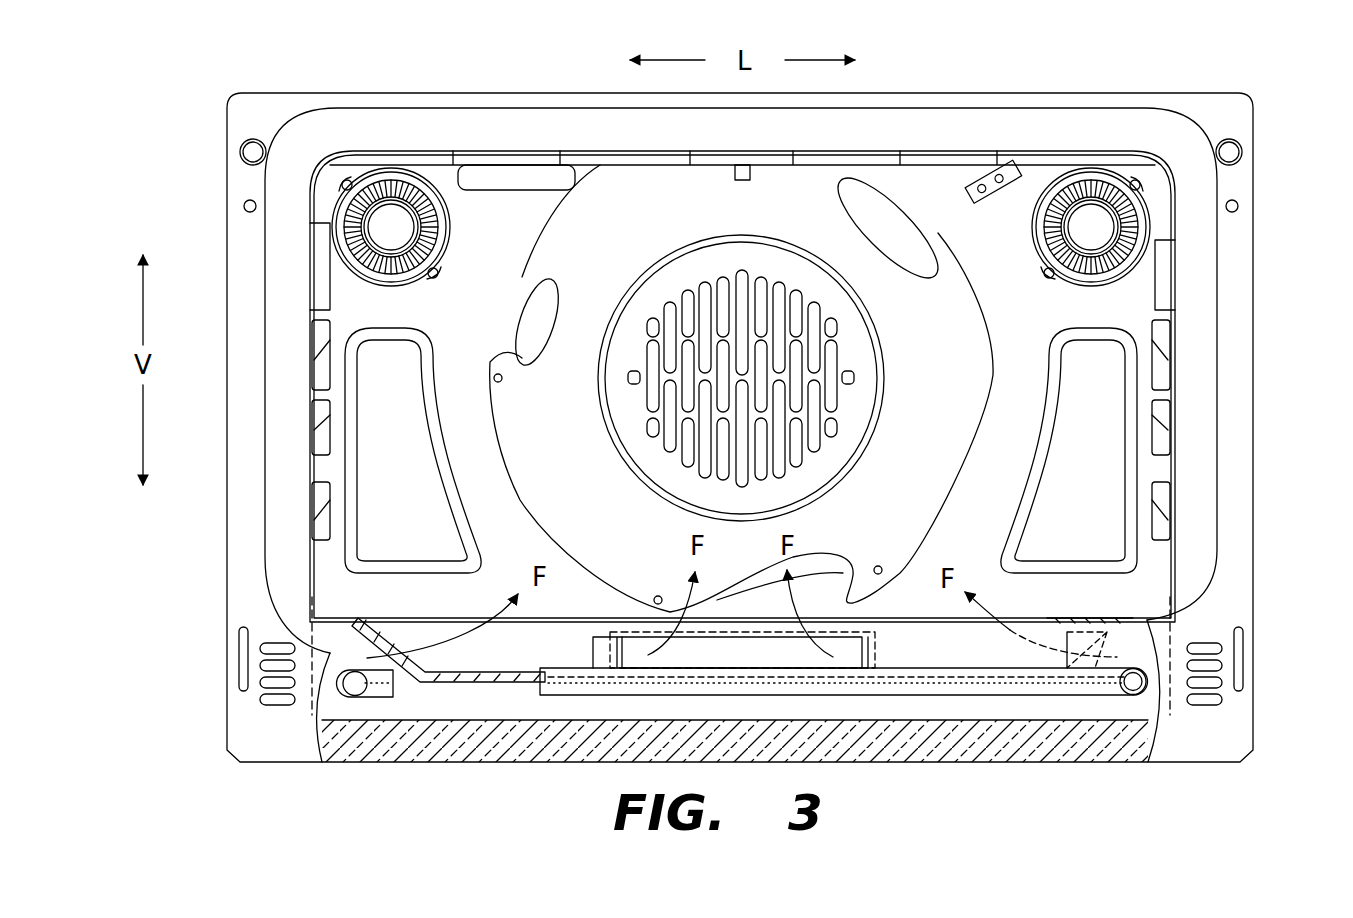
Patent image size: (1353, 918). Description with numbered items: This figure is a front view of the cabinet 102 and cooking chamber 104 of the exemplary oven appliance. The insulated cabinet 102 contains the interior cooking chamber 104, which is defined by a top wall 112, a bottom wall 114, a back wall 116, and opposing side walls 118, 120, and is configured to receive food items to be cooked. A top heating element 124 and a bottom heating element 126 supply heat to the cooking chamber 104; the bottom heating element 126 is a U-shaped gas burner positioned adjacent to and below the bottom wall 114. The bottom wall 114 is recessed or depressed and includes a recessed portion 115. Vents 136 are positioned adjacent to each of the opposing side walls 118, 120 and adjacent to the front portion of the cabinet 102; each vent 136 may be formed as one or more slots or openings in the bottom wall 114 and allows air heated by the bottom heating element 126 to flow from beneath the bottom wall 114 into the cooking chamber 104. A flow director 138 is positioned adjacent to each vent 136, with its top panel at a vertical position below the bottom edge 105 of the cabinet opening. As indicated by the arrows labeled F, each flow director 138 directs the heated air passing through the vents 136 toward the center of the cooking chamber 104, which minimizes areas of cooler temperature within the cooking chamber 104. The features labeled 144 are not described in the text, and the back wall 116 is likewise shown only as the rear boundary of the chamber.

The cabinet 102 is at (270, 118).
The cooking chamber 104 is at (923, 188).
The bottom edge 105 is at (355, 606).
The top wall 112 is at (447, 166).
The bottom wall 114 is at (1095, 622).
The recessed portion 115 is at (593, 652).
The back wall 116 is at (483, 320).
The side wall 118 is at (318, 470).
The side wall 120 is at (1164, 470).
The top heating element 124 is at (775, 163).
The bottom heating element 126 is at (1070, 683).
The vent 136 is at (378, 672).
The flow director 138 is at (397, 632).
The side vent guides 144 is at (308, 360).